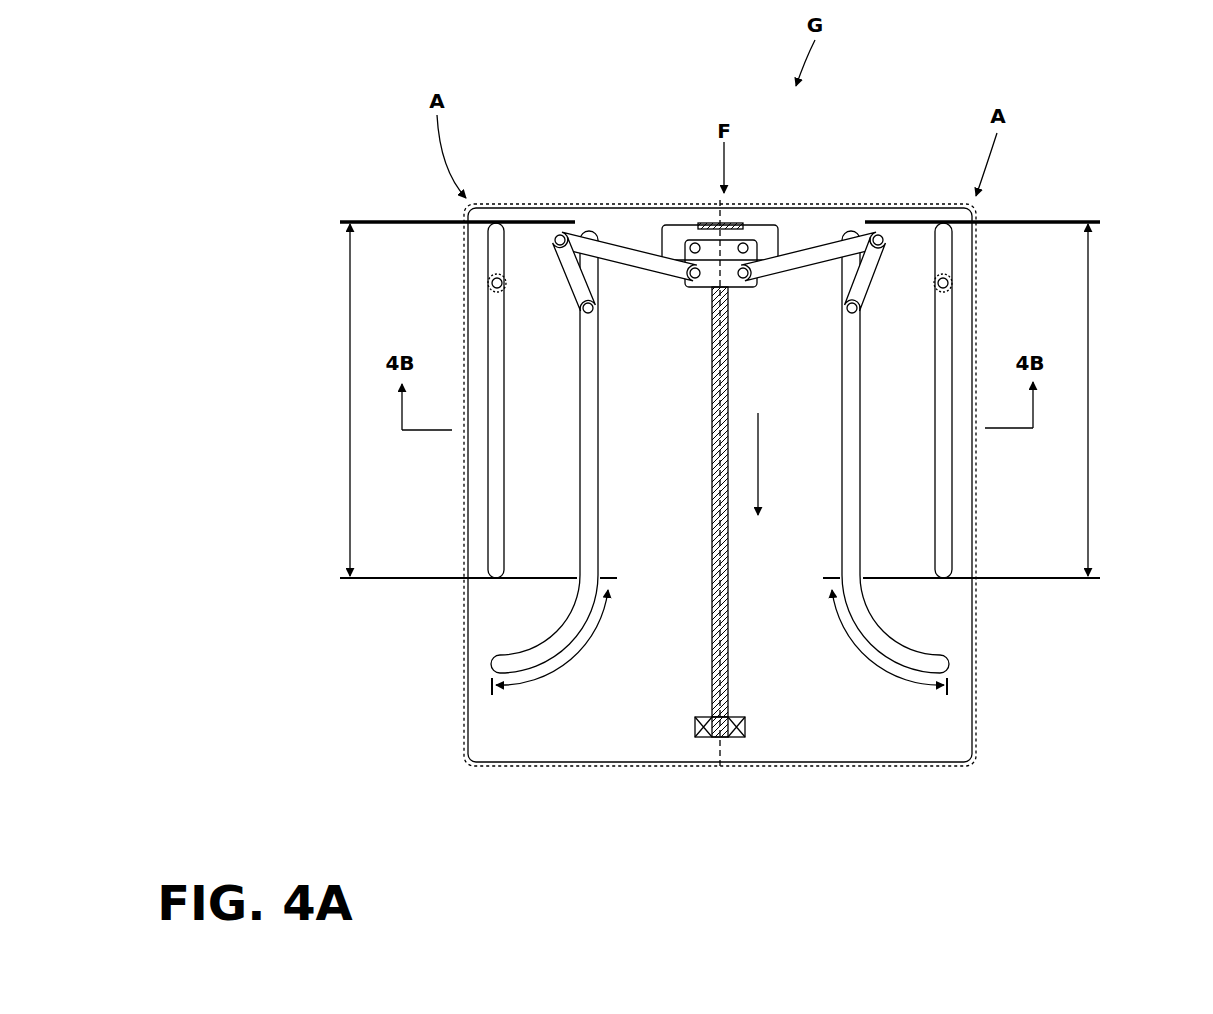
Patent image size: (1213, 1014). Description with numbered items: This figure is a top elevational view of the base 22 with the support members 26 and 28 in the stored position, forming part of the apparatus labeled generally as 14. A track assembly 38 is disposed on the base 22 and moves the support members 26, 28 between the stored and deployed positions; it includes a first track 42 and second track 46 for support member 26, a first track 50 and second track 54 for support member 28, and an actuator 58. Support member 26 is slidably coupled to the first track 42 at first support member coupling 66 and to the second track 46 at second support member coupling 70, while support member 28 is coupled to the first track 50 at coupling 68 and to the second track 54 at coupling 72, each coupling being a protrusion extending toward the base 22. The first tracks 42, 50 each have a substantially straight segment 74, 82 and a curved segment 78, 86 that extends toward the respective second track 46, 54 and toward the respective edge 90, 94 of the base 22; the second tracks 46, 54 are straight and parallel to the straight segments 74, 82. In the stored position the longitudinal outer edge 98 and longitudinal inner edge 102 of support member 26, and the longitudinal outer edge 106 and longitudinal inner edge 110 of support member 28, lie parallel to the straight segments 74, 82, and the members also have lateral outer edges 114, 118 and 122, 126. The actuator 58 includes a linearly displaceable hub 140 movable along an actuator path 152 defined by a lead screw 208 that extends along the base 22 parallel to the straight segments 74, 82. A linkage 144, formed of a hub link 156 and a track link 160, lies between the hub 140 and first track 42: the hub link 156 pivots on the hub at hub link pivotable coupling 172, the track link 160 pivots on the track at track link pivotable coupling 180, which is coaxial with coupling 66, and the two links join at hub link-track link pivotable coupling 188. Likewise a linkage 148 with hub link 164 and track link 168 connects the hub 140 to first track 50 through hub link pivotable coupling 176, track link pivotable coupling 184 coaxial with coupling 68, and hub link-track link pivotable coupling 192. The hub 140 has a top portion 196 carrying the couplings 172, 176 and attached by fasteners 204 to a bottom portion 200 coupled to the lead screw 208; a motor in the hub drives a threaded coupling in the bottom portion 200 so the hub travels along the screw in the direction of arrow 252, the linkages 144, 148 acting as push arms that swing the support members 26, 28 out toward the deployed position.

The assembly 14 is at (1070, 170).
The base 22 is at (975, 712).
The support member 26 is at (912, 768).
The support member 28 is at (540, 765).
The track assembly 38 is at (905, 242).
The first track 42 is at (862, 545).
The second track 46 is at (942, 448).
The first track 50 is at (583, 535).
The second track 54 is at (497, 352).
The actuator 58 is at (678, 235).
The first support member coupling 66 is at (853, 313).
The first support member coupling 68 is at (598, 300).
The second support member coupling 70 is at (948, 282).
The second support member coupling 72 is at (492, 280).
The substantially straight segment 74 is at (1090, 402).
The curved segment 78 is at (860, 657).
The substantially straight segment 82 is at (348, 377).
The curved segment 86 is at (563, 663).
The edge 90 is at (972, 534).
The edge 94 is at (467, 493).
The longitudinal outer edge 98 is at (980, 607).
The longitudinal inner edge 102 is at (733, 543).
The longitudinal outer edge 106 is at (460, 660).
The longitudinal inner edge 110 is at (712, 480).
The lateral outer edge 114 is at (828, 770).
The lateral outer edge 118 is at (950, 207).
The lateral outer edge 122 is at (632, 770).
The lateral outer edge 126 is at (578, 205).
The linearly displaceable hub 140 is at (745, 241).
The linkage 144 is at (880, 235).
The linkage 148 is at (617, 248).
The actuator path 152 is at (713, 360).
The hub link 156 is at (770, 268).
The track link 160 is at (870, 282).
The hub link 164 is at (642, 256).
The track link 168 is at (580, 290).
The hub link pivotable coupling 172 is at (747, 287).
The hub link pivotable coupling 176 is at (695, 287).
The track link pivotable coupling 180 is at (972, 337).
The track link pivotable coupling 184 is at (587, 313).
The hub link-track link pivotable coupling 188 is at (903, 207).
The hub link-track link pivotable coupling 192 is at (560, 235).
The top portion 196 is at (712, 250).
The bottom portion 200 is at (815, 255).
The fasteners 204 is at (690, 243).
The lead screw 208 is at (730, 605).
The arrow 252 is at (760, 465).